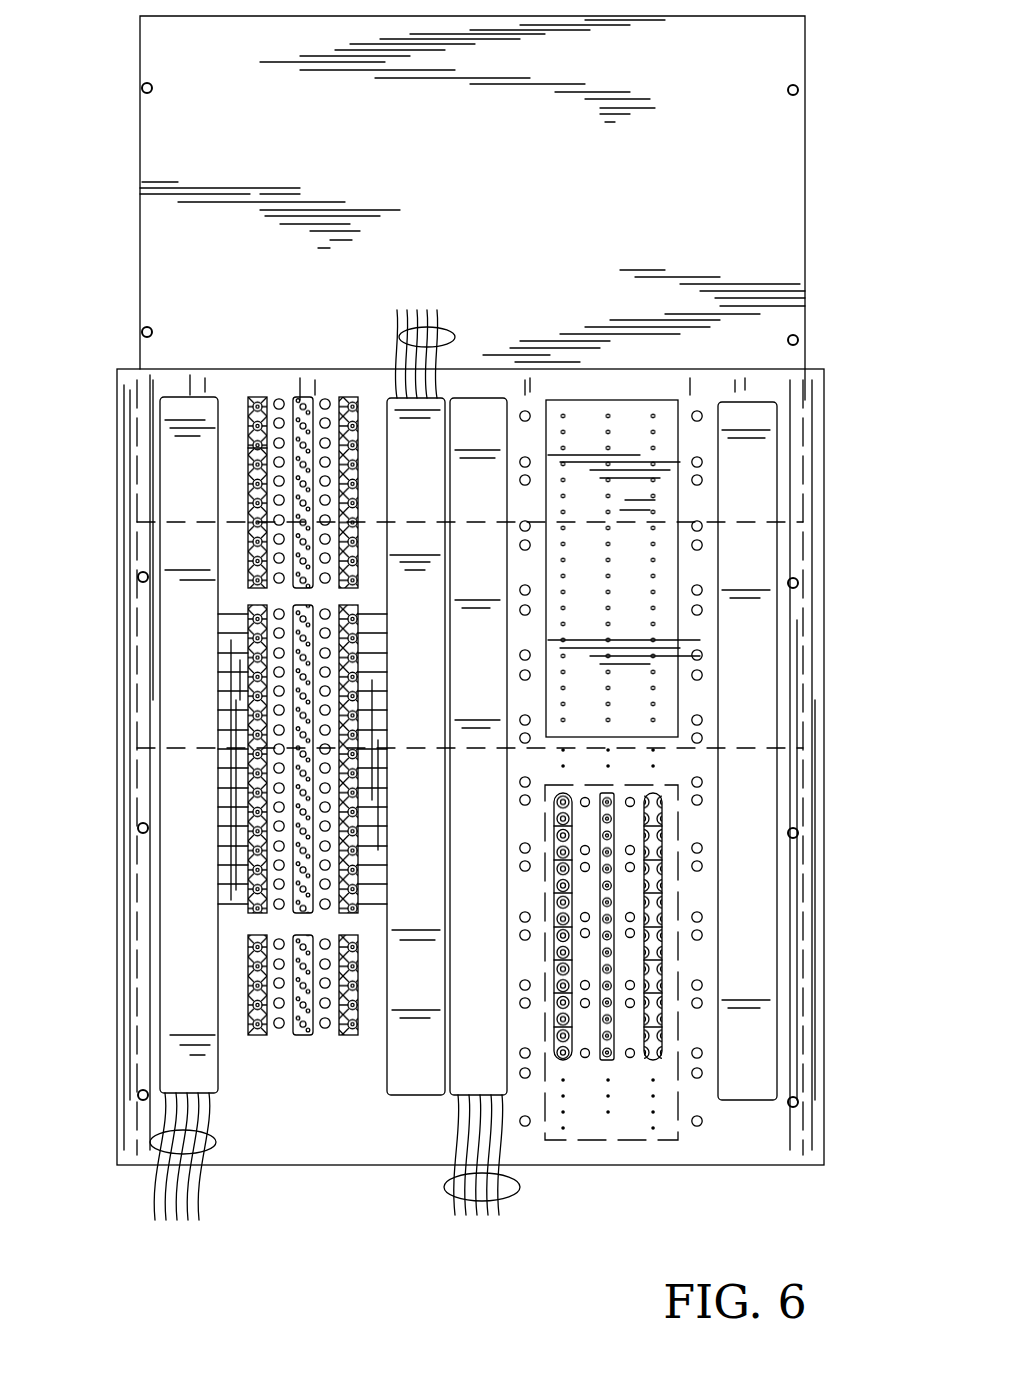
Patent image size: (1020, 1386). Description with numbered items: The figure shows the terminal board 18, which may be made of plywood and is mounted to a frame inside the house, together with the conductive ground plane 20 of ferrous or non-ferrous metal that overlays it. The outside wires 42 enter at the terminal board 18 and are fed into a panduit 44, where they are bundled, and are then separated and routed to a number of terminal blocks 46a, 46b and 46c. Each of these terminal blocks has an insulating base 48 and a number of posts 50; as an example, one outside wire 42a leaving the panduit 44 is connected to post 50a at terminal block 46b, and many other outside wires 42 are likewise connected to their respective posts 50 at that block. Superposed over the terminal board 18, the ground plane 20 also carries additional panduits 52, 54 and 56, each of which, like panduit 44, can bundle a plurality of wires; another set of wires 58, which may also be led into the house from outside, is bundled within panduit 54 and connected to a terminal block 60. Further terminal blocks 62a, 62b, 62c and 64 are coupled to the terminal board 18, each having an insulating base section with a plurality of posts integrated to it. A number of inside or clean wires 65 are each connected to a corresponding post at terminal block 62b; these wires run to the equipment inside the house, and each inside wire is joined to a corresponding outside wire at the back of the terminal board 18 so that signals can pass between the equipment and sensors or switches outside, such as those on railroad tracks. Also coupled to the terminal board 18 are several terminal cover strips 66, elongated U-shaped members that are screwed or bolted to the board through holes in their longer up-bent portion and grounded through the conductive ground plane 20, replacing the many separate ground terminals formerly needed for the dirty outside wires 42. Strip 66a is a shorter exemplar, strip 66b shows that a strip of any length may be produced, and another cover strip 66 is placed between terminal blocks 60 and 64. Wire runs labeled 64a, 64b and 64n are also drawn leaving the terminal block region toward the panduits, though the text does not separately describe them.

The terminal board 18 is at (805, 222).
The ground plane 20 is at (823, 535).
The outside wires 42 is at (152, 1145).
The outside wire 42a is at (247, 612).
The panduit 44 is at (160, 703).
The terminal block 46a is at (248, 408).
The terminal block 46b is at (248, 900).
The terminal block 46c is at (248, 985).
The insulating base 48 is at (248, 448).
The posts 50 is at (249, 396).
The post 50a is at (256, 605).
The panduit 52 is at (398, 1080).
The panduit 54 is at (460, 948).
The panduit 56 is at (732, 903).
The wires 58 is at (445, 1200).
The terminal block 60 is at (563, 793).
The terminal block 62a is at (350, 396).
The terminal block 62b is at (360, 608).
The terminal block 62c is at (349, 1036).
The terminal block 64 is at (653, 793).
The output wire 64a is at (378, 636).
The output wire 64b is at (378, 667).
The output wire 64n is at (378, 908).
The wires 65 is at (452, 335).
The terminal cover strip 66 is at (607, 793).
The cover strip 66a is at (303, 396).
The cover strip 66b is at (312, 770).